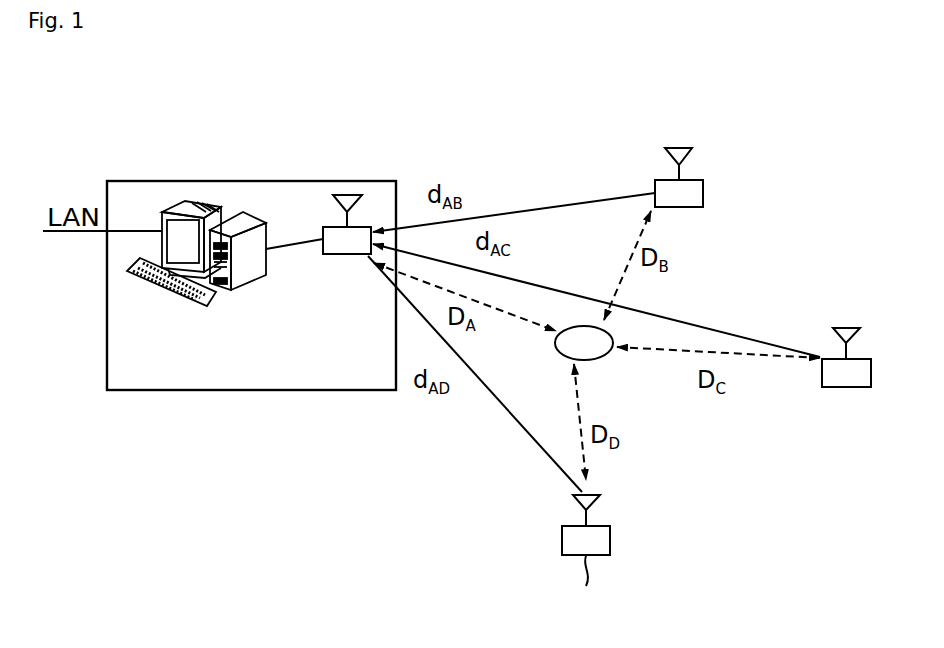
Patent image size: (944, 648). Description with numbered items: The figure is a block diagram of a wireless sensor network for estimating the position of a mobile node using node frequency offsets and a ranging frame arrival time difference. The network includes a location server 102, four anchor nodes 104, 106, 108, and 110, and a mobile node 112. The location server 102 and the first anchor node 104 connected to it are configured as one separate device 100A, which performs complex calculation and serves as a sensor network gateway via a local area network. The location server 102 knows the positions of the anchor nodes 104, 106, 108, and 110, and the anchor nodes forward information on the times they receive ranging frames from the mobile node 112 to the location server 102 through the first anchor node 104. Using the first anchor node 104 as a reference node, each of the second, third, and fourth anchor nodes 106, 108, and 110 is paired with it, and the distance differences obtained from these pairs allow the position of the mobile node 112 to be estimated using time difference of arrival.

The separate device 100A is at (255, 391).
The location server 102 is at (183, 207).
The anchor node N_A 104 is at (347, 193).
The anchor node N_B 106 is at (679, 148).
The anchor node N_C 108 is at (846, 328).
The anchor node N_D 110 is at (597, 501).
The mobile node N_M 112 is at (556, 345).